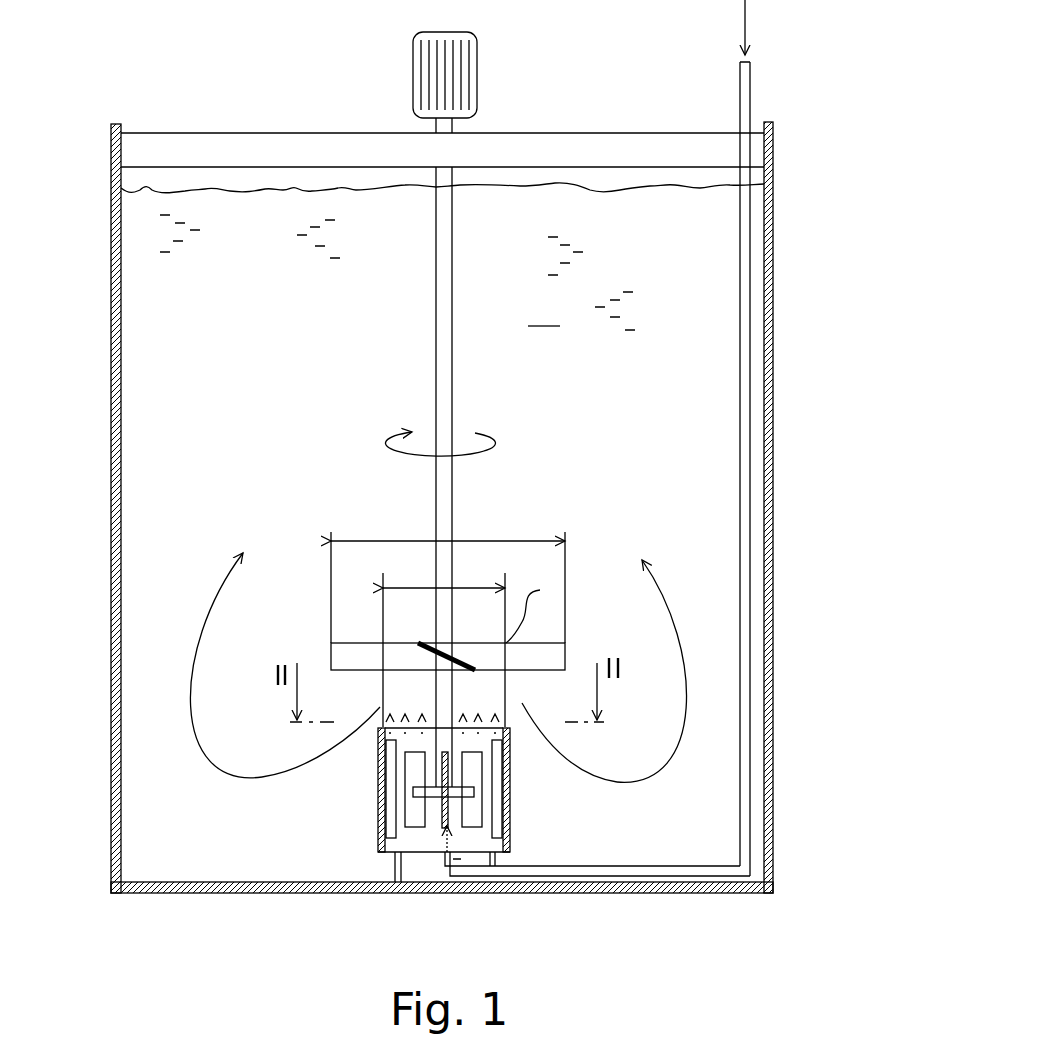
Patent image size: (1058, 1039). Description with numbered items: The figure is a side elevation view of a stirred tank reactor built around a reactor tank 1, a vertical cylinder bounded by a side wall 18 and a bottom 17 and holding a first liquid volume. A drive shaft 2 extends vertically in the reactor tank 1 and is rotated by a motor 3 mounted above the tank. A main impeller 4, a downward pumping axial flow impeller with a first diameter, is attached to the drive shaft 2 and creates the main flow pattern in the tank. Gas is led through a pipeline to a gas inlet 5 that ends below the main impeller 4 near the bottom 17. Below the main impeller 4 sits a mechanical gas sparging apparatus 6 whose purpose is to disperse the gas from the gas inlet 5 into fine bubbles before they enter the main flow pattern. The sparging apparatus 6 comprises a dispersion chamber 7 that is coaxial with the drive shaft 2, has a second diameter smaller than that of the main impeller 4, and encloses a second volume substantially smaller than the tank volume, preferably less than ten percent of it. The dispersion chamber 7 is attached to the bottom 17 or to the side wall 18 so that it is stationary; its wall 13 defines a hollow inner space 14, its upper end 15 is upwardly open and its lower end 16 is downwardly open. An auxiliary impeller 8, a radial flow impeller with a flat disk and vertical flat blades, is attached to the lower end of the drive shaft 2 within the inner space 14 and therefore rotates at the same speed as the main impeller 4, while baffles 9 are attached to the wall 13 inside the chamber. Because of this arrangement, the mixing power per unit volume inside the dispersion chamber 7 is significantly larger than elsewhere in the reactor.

The reactor tank 1 is at (111, 325).
The drive shaft 2 is at (436, 243).
The motor 3 is at (413, 60).
The main impeller 4 is at (331, 652).
The gas inlet 5 is at (447, 857).
The mechanical gas sparging apparatus 6 is at (372, 797).
The dispersion chamber 7 is at (510, 785).
The auxiliary impeller 8 is at (416, 780).
The baffles 9 is at (392, 822).
The wall 13 is at (509, 758).
The inner space 14 is at (433, 840).
The upper end 15 is at (388, 727).
The lower end 16 is at (390, 858).
The bottom 17 is at (238, 882).
The side wall 18 is at (121, 708).